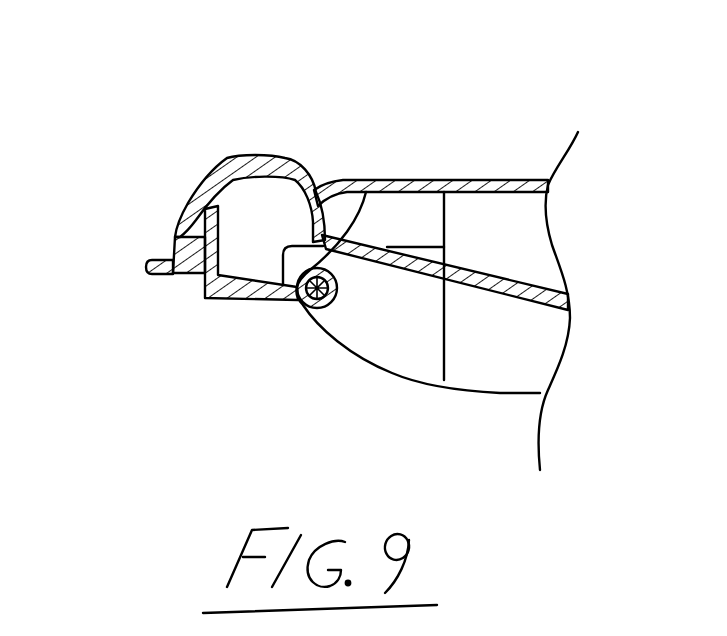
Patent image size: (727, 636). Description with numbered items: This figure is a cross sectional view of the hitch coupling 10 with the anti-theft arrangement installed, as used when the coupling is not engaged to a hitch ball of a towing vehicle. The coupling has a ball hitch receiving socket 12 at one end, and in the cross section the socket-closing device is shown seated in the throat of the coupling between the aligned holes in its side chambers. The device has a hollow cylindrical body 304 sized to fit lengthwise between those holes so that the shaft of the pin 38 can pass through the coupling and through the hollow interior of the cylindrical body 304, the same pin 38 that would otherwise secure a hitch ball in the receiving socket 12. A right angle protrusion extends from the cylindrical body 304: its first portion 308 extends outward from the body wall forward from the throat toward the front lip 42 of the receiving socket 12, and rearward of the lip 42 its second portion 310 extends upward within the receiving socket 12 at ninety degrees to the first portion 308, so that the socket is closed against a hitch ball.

The hitch coupling 10 is at (433, 144).
The ball hitch receiving socket 12 is at (226, 155).
The pin 38 is at (363, 181).
The front lip 42 is at (161, 276).
The hollow cylindrical body 304 is at (337, 290).
The first portion 308 is at (257, 301).
The second portion 310 is at (177, 228).